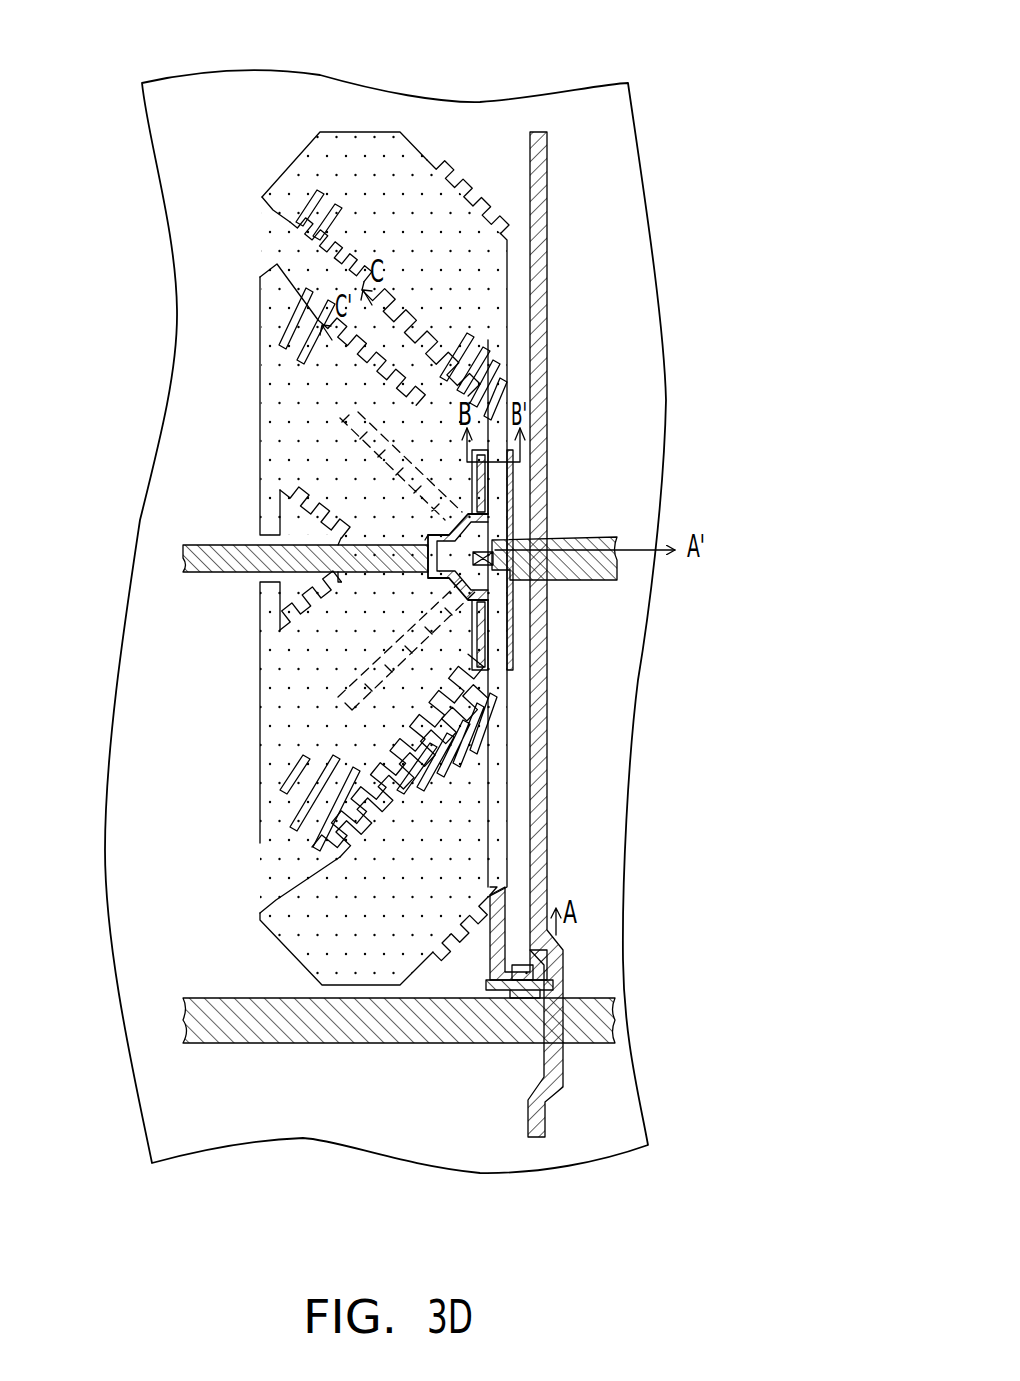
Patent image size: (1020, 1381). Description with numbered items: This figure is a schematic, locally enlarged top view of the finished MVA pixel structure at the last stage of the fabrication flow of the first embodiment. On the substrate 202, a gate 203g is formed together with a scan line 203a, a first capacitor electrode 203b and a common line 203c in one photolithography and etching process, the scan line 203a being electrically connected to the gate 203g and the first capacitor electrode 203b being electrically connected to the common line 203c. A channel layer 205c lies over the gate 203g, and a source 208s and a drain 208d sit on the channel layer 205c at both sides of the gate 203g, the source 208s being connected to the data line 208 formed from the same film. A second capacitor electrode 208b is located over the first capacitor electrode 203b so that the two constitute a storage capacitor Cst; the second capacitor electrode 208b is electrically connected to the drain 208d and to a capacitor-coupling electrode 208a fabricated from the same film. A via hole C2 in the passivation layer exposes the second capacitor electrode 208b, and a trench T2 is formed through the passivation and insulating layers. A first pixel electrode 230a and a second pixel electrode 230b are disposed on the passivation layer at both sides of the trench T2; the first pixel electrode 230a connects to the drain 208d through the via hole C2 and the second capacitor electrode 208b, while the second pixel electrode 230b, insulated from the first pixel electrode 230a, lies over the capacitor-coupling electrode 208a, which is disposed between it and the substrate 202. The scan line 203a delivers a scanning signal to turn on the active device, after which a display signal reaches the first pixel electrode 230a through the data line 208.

The substrate 202 is at (593, 1128).
The first pixel electrode 230a is at (378, 205).
The second pixel electrode 230b is at (293, 377).
The trench T2 is at (293, 257).
The capacitor-coupling electrode 208a is at (340, 418).
The common line 203c is at (183, 558).
The drain 208d is at (496, 985).
The storage capacitor Cst is at (645, 542).
The first capacitor electrode 203b is at (513, 477).
The second capacitor electrode 208b is at (485, 490).
The via hole C2 is at (497, 558).
The data line 208 is at (540, 800).
The source 208s is at (538, 982).
The channel layer 205c is at (517, 980).
The gate 203g is at (522, 990).
The scan line 203a is at (252, 1027).